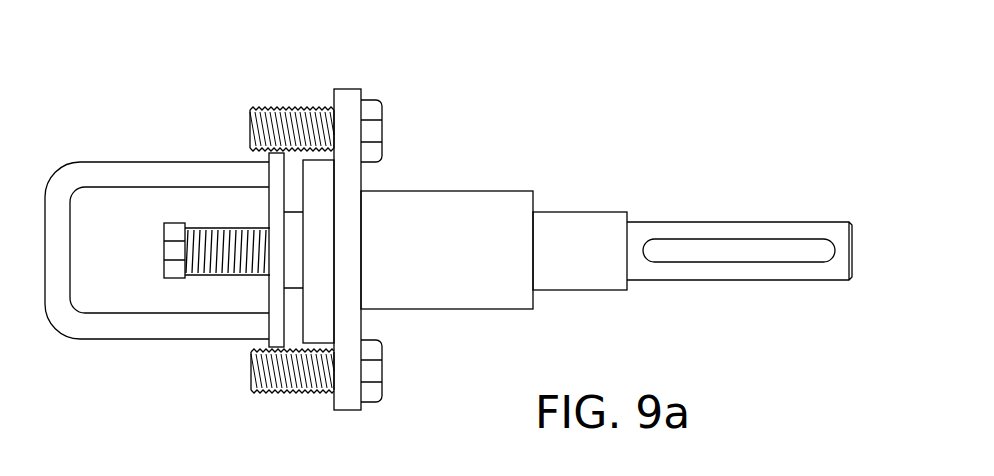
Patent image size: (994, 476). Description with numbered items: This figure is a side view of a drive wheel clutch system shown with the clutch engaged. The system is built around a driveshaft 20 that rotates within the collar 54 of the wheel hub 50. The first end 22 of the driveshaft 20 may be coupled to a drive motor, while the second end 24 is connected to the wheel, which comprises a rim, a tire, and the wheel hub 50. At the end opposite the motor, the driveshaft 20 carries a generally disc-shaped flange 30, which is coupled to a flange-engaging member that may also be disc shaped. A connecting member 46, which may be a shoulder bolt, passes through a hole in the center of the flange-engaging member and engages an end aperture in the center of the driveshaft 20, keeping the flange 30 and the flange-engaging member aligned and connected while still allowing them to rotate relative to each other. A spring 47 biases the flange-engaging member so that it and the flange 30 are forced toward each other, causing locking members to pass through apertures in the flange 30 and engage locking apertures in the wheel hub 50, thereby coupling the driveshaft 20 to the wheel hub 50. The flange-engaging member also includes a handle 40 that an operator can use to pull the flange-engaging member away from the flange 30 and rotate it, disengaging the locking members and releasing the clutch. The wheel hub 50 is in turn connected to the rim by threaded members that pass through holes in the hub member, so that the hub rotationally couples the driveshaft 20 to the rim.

The driveshaft 20 is at (555, 230).
The first end 22 is at (853, 250).
The second end 24 is at (293, 223).
The flange 30 is at (317, 332).
The handle 40 is at (120, 173).
The connecting member 46 is at (173, 245).
The spring 47 is at (212, 228).
The wheel hub 50 is at (348, 108).
The collar 54 is at (432, 208).